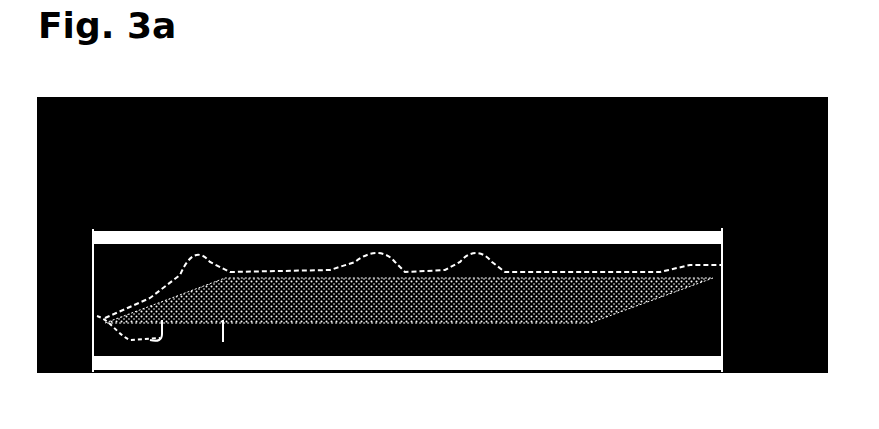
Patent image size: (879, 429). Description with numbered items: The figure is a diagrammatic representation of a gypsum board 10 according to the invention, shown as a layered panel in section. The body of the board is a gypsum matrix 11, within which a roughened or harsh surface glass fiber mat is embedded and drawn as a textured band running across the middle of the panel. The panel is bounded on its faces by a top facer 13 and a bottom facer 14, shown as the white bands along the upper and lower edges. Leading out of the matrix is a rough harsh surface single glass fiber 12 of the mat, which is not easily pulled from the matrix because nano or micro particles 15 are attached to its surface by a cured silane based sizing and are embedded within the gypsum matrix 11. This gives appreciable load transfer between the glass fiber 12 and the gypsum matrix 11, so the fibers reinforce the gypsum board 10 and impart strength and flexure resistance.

The gypsum board 10 is at (607, 180).
The gypsum matrix 11 is at (690, 322).
The rough harsh surface single glass fiber 12 is at (722, 370).
The top facer 13 is at (93, 316).
The bottom facer 14 is at (715, 233).
The nano or micro particles 15 is at (700, 268).